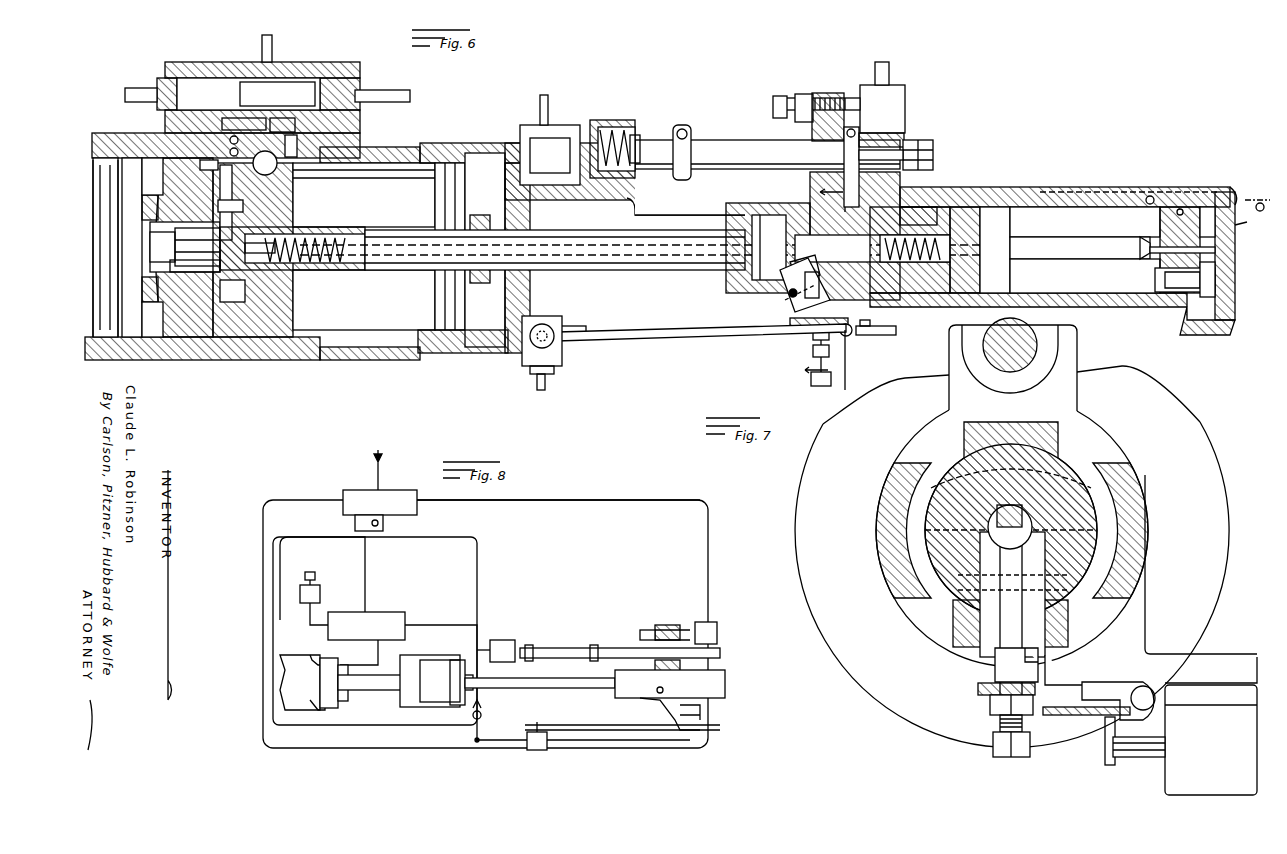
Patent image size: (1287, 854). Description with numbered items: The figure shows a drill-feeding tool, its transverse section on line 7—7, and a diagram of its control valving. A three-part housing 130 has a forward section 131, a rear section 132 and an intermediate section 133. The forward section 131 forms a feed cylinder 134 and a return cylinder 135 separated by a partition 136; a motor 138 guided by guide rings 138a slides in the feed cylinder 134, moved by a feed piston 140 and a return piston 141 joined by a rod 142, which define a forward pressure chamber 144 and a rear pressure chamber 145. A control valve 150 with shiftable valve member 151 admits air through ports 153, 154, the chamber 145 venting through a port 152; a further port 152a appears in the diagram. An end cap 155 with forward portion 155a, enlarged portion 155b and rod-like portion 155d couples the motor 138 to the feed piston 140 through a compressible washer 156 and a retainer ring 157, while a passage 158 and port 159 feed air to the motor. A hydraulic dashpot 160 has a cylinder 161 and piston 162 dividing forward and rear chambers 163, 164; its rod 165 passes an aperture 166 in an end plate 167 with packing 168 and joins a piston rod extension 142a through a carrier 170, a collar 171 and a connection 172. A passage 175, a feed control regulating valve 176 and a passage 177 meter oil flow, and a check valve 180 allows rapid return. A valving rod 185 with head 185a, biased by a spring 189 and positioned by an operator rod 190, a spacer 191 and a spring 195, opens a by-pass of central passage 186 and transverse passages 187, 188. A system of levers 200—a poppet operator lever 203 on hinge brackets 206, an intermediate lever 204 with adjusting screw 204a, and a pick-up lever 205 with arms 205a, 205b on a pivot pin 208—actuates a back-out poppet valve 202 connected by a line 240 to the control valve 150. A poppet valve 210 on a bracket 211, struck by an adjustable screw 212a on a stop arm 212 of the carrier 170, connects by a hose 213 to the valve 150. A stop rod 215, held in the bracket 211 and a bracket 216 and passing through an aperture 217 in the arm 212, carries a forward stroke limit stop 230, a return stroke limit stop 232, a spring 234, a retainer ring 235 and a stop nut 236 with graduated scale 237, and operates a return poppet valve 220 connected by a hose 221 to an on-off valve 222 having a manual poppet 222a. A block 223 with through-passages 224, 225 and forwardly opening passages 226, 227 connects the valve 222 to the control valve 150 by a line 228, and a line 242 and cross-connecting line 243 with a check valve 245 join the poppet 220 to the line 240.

In FIG. 6, the three-part housing 130 is at (445, 143).
In FIG. 6, the forward section 131 is at (196, 340).
In FIG. 6, the rear section 132 is at (1060, 185).
In FIG. 6, the intermediate section 133 is at (500, 350).
In FIG. 7, the intermediate section 133 is at (1145, 528).
In FIG. 6, the feed cylinder 134 is at (132, 158).
In FIG. 6, the return cylinder 135 is at (342, 320).
In FIG. 8, the return cylinder 135 is at (425, 707).
In FIG. 6, the transverse partition 136 is at (300, 188).
In FIG. 6, the motor 138 is at (105, 360).
In FIG. 8, the motor 138 is at (295, 682).
In FIG. 6, the guide rings 138a is at (105, 158).
In FIG. 6, the feed piston 140 is at (180, 338).
In FIG. 8, the feed piston 140 is at (330, 715).
In FIG. 6, the return piston 141 is at (435, 300).
In FIG. 8, the return piston 141 is at (452, 655).
In FIG. 6, the piston rod 142 is at (415, 270).
In FIG. 8, the piston rod 142 is at (388, 700).
In FIG. 6, the piston rod extension 142a is at (602, 233).
In FIG. 8, the piston rod extension 142a is at (560, 685).
In FIG. 6, the forward pressure chamber 144 is at (235, 282).
In FIG. 6, the rear pressure chamber 145 is at (385, 320).
In FIG. 6, the control valve 150 is at (360, 48).
In FIG. 8, the control valve 150 is at (417, 512).
In FIG. 6, the valve member 151 is at (280, 78).
In FIG. 6, the port 152 is at (258, 175).
In FIG. 8, the port 152 is at (372, 523).
In FIG. 8, the valve plunger 152a is at (341, 672).
In FIG. 6, the port 153 is at (232, 205).
In FIG. 8, the port 153 is at (385, 648).
In FIG. 6, the port 154 is at (364, 174).
In FIG. 6, the end cap 155 is at (150, 240).
In FIG. 6, the forward portion 155a is at (126, 185).
In FIG. 6, the enlarged portion 155b is at (130, 200).
In FIG. 6, the rod-like portion 155d is at (296, 228).
In FIG. 6, the washer 156 is at (150, 318).
In FIG. 8, the washer 156 is at (310, 655).
In FIG. 6, the retainer ring 157 is at (154, 239).
In FIG. 6, the passage 158 is at (175, 250).
In FIG. 6, the port 159 is at (220, 246).
In FIG. 6, the hydraulic dashpot 160 is at (1160, 295).
In FIG. 6, the dashpot cylinder 161 is at (1148, 192).
In FIG. 6, the dashpot piston 162 is at (1190, 205).
In FIG. 6, the forward dashpot chamber 163 is at (1045, 188).
In FIG. 6, the rear dashpot chamber 164 is at (1208, 205).
In FIG. 6, the dashpot piston rod 165 is at (1078, 237).
In FIG. 6, the central aperture 166 is at (1045, 238).
In FIG. 6, the end plate 167 is at (1015, 286).
In FIG. 6, the packing 168 is at (1015, 272).
In FIG. 6, the carrier 170 is at (742, 200).
In FIG. 7, the carrier 170 is at (1058, 478).
In FIG. 8, the carrier 170 is at (620, 695).
In FIG. 6, the annular collar 171 is at (768, 212).
In FIG. 6, the connection 172 is at (952, 205).
In FIG. 6, the passage 175 is at (1108, 182).
In FIG. 6, the feed control regulating valve 176 is at (1256, 192).
In FIG. 6, the passage 177 is at (1250, 230).
In FIG. 6, the check valve 180 is at (1154, 281).
In FIG. 6, the valving rod 185 is at (1115, 237).
In FIG. 6, the head 185a is at (890, 225).
In FIG. 6, the central passage 186 is at (1215, 252).
In FIG. 6, the transverse passage 187 is at (1160, 230).
In FIG. 6, the transverse passage 188 is at (1225, 282).
In FIG. 6, the spring 189 is at (908, 262).
In FIG. 6, the operator rod 190 is at (366, 240).
In FIG. 6, the spacer 191 is at (820, 230).
In FIG. 7, the spacer 191 is at (1022, 516).
In FIG. 6, the spring 195 is at (335, 265).
In FIG. 6, the system of levers 200 is at (788, 325).
In FIG. 8, the system of levers 200 is at (678, 735).
In FIG. 6, the poppet valve 202 is at (562, 360).
In FIG. 7, the poppet valve 202 is at (1167, 786).
In FIG. 8, the poppet valve 202 is at (547, 742).
In FIG. 6, the poppet operator lever 203 is at (700, 332).
In FIG. 7, the poppet operator lever 203 is at (1060, 715).
In FIG. 8, the poppet operator lever 203 is at (585, 728).
In FIG. 6, the intermediate lever 204 is at (790, 312).
In FIG. 7, the intermediate lever 204 is at (978, 690).
In FIG. 8, the intermediate lever 204 is at (655, 708).
In FIG. 6, the adjusting screw 204a is at (840, 312).
In FIG. 7, the adjusting screw 204a is at (1000, 725).
In FIG. 8, the adjusting screw 204a is at (700, 713).
In FIG. 6, the pick-up lever 205 is at (820, 292).
In FIG. 7, the pick-up lever 205 is at (1023, 577).
In FIG. 6, the arm 205a is at (820, 262).
In FIG. 7, the arm 205a is at (1020, 537).
In FIG. 6, the arm 205b is at (850, 336).
In FIG. 7, the arm 205b is at (1038, 665).
In FIG. 6, the hinge brackets 206 is at (630, 322).
In FIG. 7, the hinge brackets 206 is at (1143, 686).
In FIG. 6, the pivot pin 208 is at (785, 296).
In FIG. 8, the pivot pin 208 is at (670, 684).
In FIG. 6, the poppet valve 210 is at (905, 100).
In FIG. 8, the poppet valve 210 is at (717, 630).
In FIG. 6, the bracket 211 is at (895, 130).
In FIG. 6, the stop arm 212 is at (840, 83).
In FIG. 7, the stop arm 212 is at (1038, 433).
In FIG. 8, the stop arm 212 is at (655, 620).
In FIG. 6, the adjustable screw 212a is at (767, 104).
In FIG. 8, the adjustable screw 212a is at (684, 612).
In FIG. 6, the hose 213 is at (889, 65).
In FIG. 8, the hose 213 is at (705, 553).
In FIG. 6, the stop rod 215 is at (718, 138).
In FIG. 7, the stop rod 215 is at (1013, 368).
In FIG. 8, the stop rod 215 is at (580, 645).
In FIG. 6, the bracket 216 is at (630, 192).
In FIG. 7, the bracket 216 is at (1077, 398).
In FIG. 6, the aperture 217 is at (815, 145).
In FIG. 6, the poppet valve 220 is at (555, 120).
In FIG. 8, the poppet valve 220 is at (515, 640).
In FIG. 6, the hose 221 is at (548, 100).
In FIG. 8, the hose 221 is at (500, 630).
In FIG. 8, the on-off valve 222 is at (405, 604).
In FIG. 8, the manually operable poppet 222a is at (330, 590).
In FIG. 6, the block 223 is at (201, 169).
In FIG. 6, the through-passage 224 is at (300, 147).
In FIG. 8, the through-passage 224 is at (383, 523).
In FIG. 6, the through-passage 225 is at (289, 123).
In FIG. 6, the forwardly opening passage 226 is at (227, 122).
In FIG. 6, the forwardly opening passage 227 is at (230, 145).
In FIG. 8, the line 228 is at (366, 565).
In FIG. 6, the forward stroke limit stop 230 is at (685, 115).
In FIG. 6, the return stroke limit stop 232 is at (842, 158).
In FIG. 6, the spring 234 is at (625, 112).
In FIG. 6, the retainer ring 235 is at (640, 120).
In FIG. 6, the stop nut 236 is at (925, 138).
In FIG. 6, the graduated scale 237 is at (875, 157).
In FIG. 8, the line 240 is at (305, 503).
In FIG. 8, the line 242 is at (455, 625).
In FIG. 8, the cross-connecting line 243 is at (482, 735).
In FIG. 8, the check valve 245 is at (482, 712).
In FIG. 6, the section line 7 is at (817, 287).